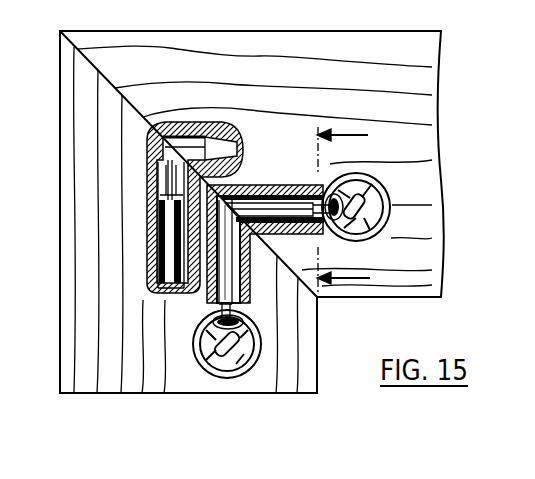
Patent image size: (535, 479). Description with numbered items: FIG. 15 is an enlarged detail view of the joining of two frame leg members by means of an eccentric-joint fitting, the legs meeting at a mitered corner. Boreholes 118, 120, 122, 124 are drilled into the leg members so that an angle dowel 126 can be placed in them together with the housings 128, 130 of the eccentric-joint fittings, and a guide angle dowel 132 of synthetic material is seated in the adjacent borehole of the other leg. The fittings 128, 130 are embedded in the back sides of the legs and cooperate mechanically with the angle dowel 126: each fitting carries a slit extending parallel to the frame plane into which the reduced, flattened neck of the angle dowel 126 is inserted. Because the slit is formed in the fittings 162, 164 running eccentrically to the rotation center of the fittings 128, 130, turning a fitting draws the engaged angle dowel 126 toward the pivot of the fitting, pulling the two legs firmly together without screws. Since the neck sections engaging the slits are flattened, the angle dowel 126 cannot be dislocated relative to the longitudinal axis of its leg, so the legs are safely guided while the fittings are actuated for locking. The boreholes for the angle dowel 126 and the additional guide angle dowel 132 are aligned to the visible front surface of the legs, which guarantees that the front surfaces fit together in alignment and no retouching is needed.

The borehole 118 is at (152, 243).
The borehole 120 is at (248, 318).
The borehole 122 is at (279, 196).
The borehole 124 is at (196, 122).
The angle dowel 126 is at (327, 209).
The housing of eccentric-joint fitting 128 is at (392, 237).
The housing of eccentric-joint fitting 130 is at (231, 380).
The guide angle dowel 132 is at (166, 170).
The fitting 162 is at (392, 188).
The fitting 164 is at (203, 312).